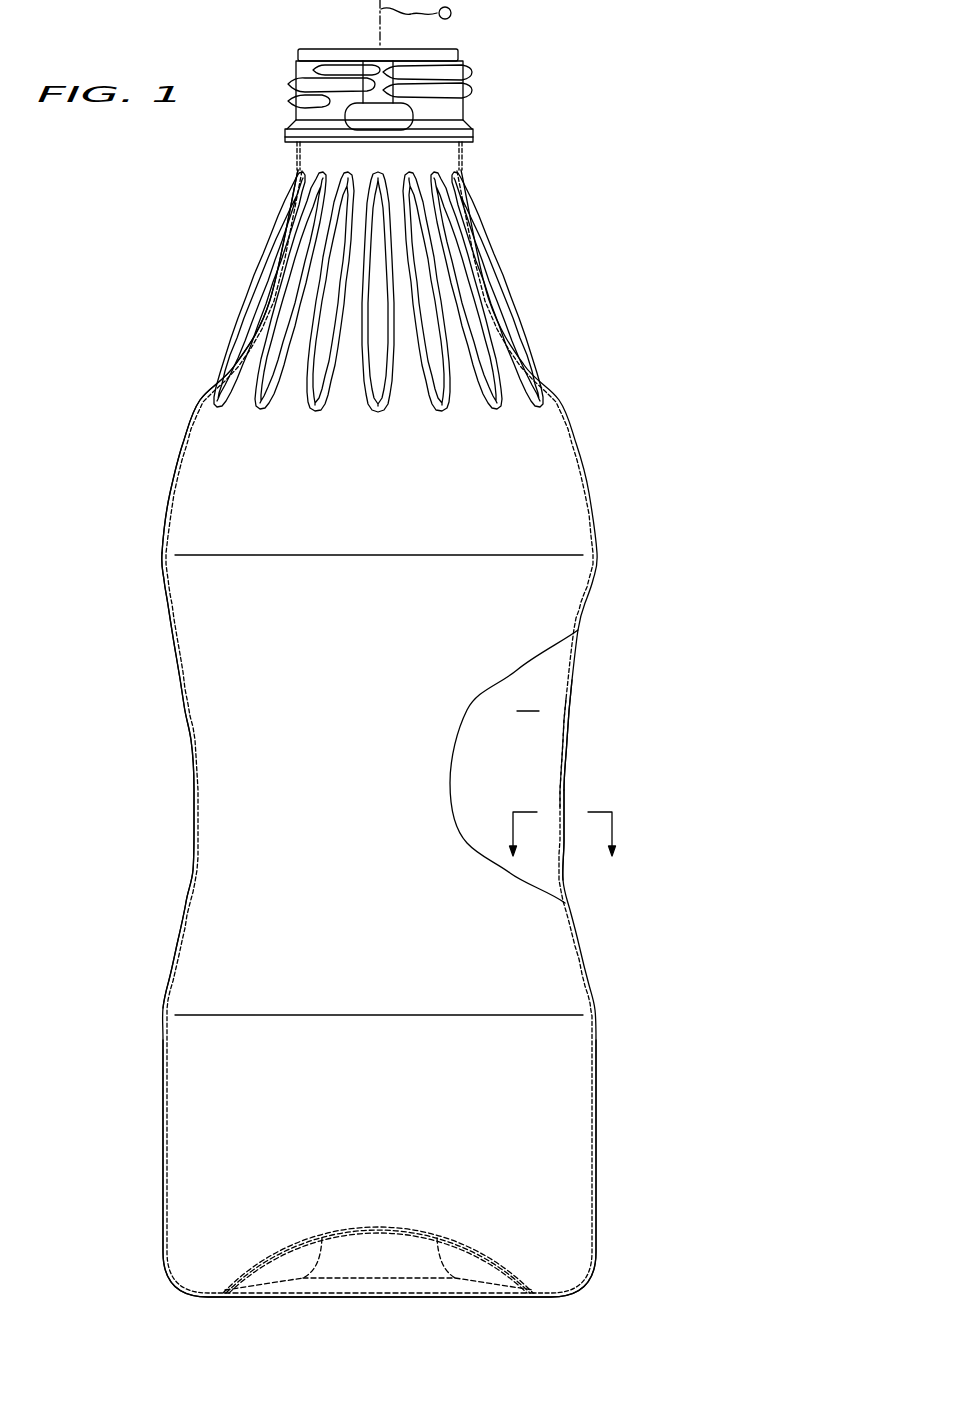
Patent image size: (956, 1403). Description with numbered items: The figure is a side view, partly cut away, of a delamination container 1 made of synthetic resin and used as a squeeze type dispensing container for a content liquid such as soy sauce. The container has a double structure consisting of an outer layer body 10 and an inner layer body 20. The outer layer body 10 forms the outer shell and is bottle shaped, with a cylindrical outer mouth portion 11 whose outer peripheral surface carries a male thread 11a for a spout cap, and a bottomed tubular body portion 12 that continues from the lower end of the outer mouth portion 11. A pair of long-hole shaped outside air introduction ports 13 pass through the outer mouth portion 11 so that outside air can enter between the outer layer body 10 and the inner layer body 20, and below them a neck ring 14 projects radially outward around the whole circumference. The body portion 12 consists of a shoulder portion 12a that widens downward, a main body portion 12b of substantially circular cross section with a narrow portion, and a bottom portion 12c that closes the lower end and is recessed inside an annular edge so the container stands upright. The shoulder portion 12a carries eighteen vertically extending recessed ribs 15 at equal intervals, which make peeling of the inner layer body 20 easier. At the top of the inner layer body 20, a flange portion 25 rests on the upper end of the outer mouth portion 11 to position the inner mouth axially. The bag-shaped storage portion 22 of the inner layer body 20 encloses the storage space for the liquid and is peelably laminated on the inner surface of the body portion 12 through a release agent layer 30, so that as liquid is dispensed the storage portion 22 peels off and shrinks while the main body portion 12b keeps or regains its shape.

The delamination container 1 is at (619, 108).
The outer layer body 10 is at (572, 727).
The outer mouth portion 11 is at (466, 61).
The male thread 11a is at (471, 93).
The body portion 12 is at (583, 950).
The shoulder portion 12a is at (303, 350).
The main body portion 12b is at (240, 843).
The bottom portion 12c is at (190, 1295).
The outside air introduction port 13 is at (352, 117).
The neck ring 14 is at (474, 136).
The recessed rib 15 is at (468, 323).
The inner layer body 20 is at (560, 777).
The storage portion 22 is at (567, 732).
The flange portion 25 is at (318, 50).
The release agent layer 30 is at (566, 755).